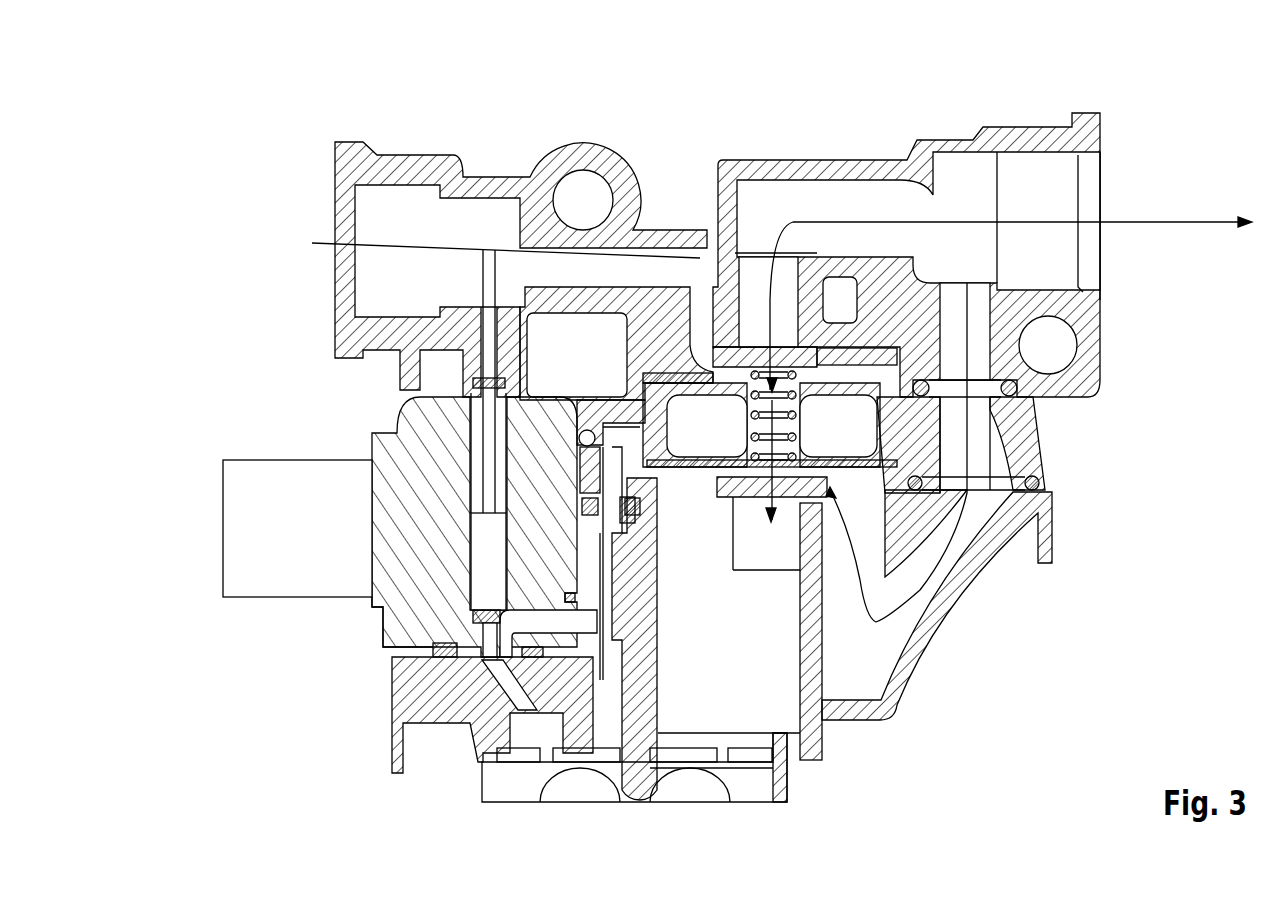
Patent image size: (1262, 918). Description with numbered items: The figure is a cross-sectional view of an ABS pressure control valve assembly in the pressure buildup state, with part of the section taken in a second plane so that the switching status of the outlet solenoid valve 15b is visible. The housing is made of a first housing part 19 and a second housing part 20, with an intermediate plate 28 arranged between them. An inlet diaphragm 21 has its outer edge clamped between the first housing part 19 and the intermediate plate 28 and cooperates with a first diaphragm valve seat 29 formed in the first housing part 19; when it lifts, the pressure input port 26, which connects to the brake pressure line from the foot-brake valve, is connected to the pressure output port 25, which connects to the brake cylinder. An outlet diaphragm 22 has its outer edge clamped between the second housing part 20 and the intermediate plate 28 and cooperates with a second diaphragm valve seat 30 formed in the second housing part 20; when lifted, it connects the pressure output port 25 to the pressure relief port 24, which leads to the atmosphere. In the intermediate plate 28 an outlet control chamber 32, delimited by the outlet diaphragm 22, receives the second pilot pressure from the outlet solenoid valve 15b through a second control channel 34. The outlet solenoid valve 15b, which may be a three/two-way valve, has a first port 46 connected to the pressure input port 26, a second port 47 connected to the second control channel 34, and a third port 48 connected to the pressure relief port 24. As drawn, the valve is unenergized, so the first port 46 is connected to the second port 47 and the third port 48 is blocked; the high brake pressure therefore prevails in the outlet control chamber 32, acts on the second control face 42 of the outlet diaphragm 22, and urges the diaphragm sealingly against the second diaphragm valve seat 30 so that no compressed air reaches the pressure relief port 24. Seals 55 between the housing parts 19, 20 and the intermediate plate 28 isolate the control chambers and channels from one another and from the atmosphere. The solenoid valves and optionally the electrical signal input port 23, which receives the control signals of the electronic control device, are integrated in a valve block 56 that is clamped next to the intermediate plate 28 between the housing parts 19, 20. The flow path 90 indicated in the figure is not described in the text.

The outlet solenoid valve 15b is at (372, 445).
The first housing part 19 is at (1083, 140).
The second housing part 20 is at (1052, 512).
The inlet diaphragm 21 is at (848, 278).
The outlet diaphragm 22 is at (753, 505).
The electrical signal input port 23 is at (240, 530).
The pressure relief port 24 is at (647, 813).
The pressure output port 25 is at (1088, 250).
The pressure input port 26 is at (345, 283).
The intermediate plate 28 is at (1030, 438).
The first diaphragm valve seat 29 is at (730, 347).
The second diaphragm valve seat 30 is at (727, 497).
The outlet control chamber 32 is at (777, 473).
The second control channel 34 is at (597, 432).
The second control face 42 is at (890, 430).
The first port 46 is at (465, 372).
The second port 47 is at (612, 640).
The third port 48 is at (488, 665).
The seals 55 is at (1020, 386).
The valve block 56 is at (410, 625).
The flow path 90 is at (765, 419).